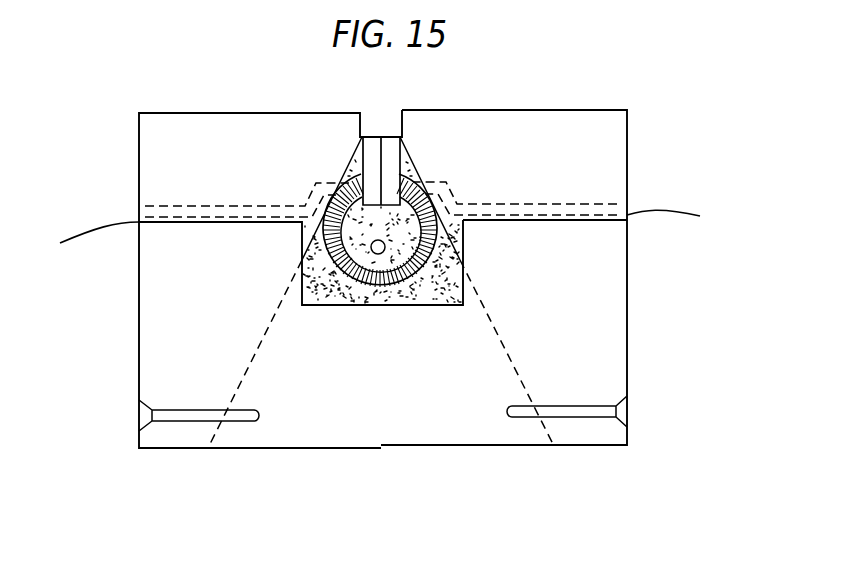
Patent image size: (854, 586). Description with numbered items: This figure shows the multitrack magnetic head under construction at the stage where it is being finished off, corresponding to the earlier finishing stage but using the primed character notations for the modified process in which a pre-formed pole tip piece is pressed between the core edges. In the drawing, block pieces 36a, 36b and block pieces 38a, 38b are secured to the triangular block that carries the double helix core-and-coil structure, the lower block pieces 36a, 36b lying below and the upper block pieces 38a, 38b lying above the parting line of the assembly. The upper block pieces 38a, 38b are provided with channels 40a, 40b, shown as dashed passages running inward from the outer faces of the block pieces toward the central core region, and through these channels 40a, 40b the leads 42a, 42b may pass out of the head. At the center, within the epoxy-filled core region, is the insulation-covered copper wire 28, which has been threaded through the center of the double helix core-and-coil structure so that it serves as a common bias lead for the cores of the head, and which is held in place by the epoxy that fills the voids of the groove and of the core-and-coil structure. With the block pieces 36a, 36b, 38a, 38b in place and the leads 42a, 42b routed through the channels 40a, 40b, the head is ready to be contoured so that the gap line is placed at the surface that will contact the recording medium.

The block piece 38a is at (270, 166).
The block piece 38b is at (514, 165).
The block piece 36a is at (170, 320).
The block piece 36b is at (670, 357).
The channel 40a is at (160, 211).
The channel 40b is at (586, 198).
The lead 42a is at (93, 233).
The lead 42b is at (673, 213).
The insulation-covered copper wire 28 is at (378, 254).